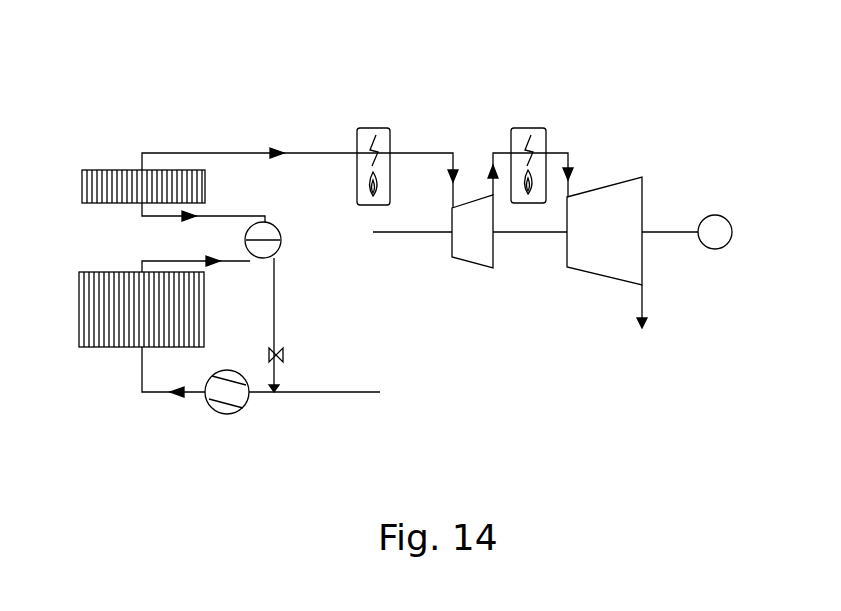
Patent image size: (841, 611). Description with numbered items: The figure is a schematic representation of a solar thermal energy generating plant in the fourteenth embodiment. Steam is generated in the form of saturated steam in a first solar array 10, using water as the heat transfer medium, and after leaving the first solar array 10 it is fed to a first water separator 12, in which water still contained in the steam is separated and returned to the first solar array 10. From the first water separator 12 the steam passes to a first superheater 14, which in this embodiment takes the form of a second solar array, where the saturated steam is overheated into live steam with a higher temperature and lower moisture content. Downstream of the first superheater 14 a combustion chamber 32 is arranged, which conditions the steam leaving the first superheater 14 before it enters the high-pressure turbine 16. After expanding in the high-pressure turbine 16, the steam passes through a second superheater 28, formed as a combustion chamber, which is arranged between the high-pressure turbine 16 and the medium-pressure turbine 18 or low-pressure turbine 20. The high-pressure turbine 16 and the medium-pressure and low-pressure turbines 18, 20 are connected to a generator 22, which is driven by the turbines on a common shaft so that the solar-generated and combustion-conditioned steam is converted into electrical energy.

The first solar array 10 is at (97, 350).
The first water separator 12 is at (280, 243).
The first superheater 14 is at (103, 170).
The high-pressure turbine 16 is at (468, 258).
The medium-pressure turbine 18 is at (591, 258).
The low-pressure turbine 20 is at (590, 268).
The generator 22 is at (710, 213).
The second superheater 28 is at (525, 126).
The combustion chamber 32 is at (372, 126).